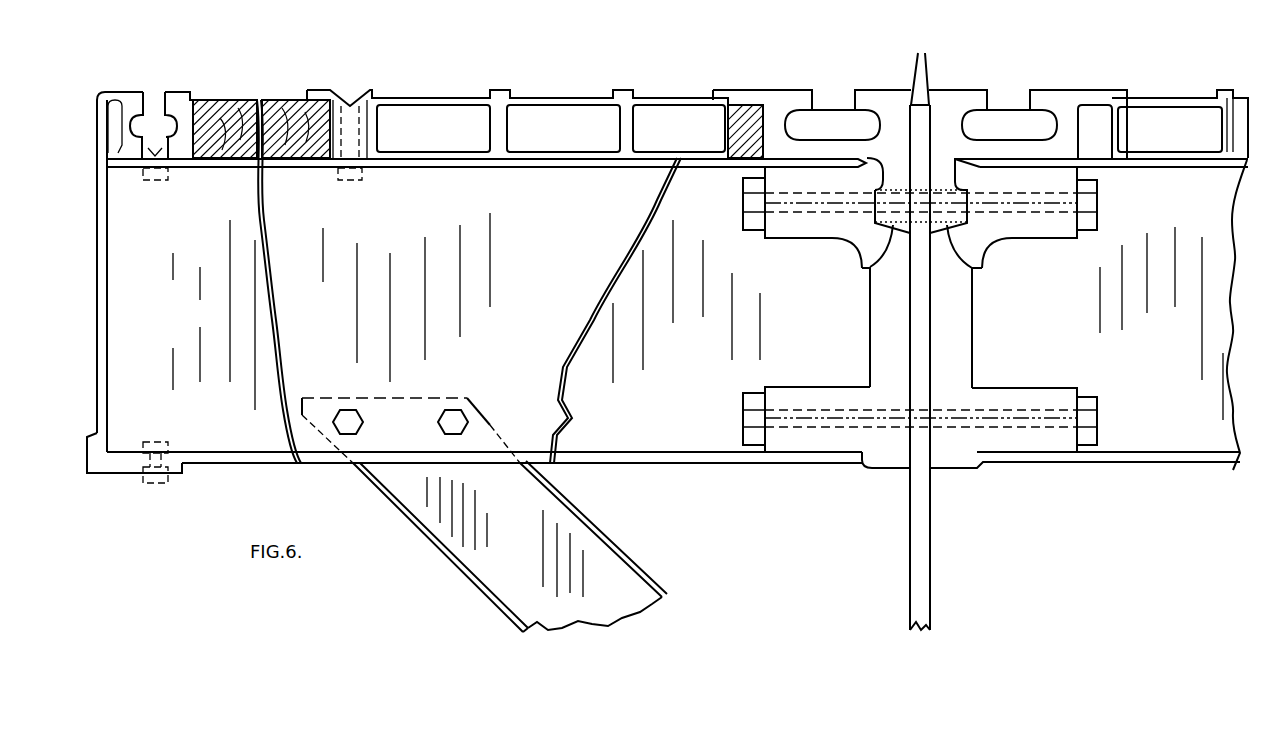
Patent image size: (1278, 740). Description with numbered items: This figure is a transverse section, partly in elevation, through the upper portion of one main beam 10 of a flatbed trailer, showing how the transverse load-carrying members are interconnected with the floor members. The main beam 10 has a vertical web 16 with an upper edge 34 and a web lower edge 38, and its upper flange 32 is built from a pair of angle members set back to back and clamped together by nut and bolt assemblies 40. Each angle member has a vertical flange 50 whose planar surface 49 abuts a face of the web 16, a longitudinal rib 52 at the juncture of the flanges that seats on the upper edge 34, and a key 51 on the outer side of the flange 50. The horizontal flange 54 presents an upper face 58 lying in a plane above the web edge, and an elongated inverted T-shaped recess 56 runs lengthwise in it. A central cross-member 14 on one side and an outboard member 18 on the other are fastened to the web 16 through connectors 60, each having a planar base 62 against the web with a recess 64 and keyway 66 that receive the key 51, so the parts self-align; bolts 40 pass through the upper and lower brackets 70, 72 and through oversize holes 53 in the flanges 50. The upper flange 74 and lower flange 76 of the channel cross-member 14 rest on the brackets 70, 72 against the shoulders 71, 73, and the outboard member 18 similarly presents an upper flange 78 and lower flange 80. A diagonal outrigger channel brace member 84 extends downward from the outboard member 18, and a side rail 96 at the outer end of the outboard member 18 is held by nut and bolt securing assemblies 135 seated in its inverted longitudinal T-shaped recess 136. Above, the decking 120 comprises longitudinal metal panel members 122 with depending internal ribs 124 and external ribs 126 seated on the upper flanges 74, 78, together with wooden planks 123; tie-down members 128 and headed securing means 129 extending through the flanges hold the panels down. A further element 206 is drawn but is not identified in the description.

The main beam 10 is at (963, 573).
The upper cross-member 14 is at (1145, 358).
The web 16 is at (933, 517).
The outboard member 18 is at (673, 355).
The upper flange 32 is at (903, 76).
The upper edge of web 34 is at (928, 100).
The web lower edge 38 is at (980, 96).
The nut and bolt assembly 40 is at (743, 202).
The planar surface 49 is at (927, 162).
The flange of angle member 50 is at (876, 187).
The key 51 is at (995, 247).
The longitudinal rib 52 is at (922, 68).
The oversize hole 53 is at (900, 190).
The flange of angle member 54 is at (810, 92).
The inverted T-shaped recess 56 is at (830, 117).
The face of flange 58 is at (907, 90).
The connector 60 is at (932, 310).
The planar base 62 is at (930, 310).
The recess 64 is at (870, 217).
The keyway 66 is at (893, 223).
The bracket 70 is at (765, 237).
The shoulder 71 is at (877, 158).
The bracket 72 is at (772, 390).
The shoulder 73 is at (875, 470).
The upper flange 74 is at (455, 167).
The lower flange 76 is at (620, 450).
The upper flange 78 is at (1197, 167).
The lower flange 80 is at (1145, 453).
The diagonal outrigger channel brace member 84 is at (647, 545).
The side rail 96 is at (102, 318).
The decking 120 is at (517, 98).
The panel member 122 is at (543, 97).
The wooden plank 123 is at (283, 117).
The internal rib 124 is at (508, 128).
The external rib 126 is at (377, 133).
The tie-down member 128 is at (377, 92).
The headed securing means 129 is at (350, 98).
The nut and bolt securing assembly 135 is at (162, 181).
The inverted longitudinal T-shaped recess 136 is at (152, 118).
The gasket block 206 is at (733, 100).